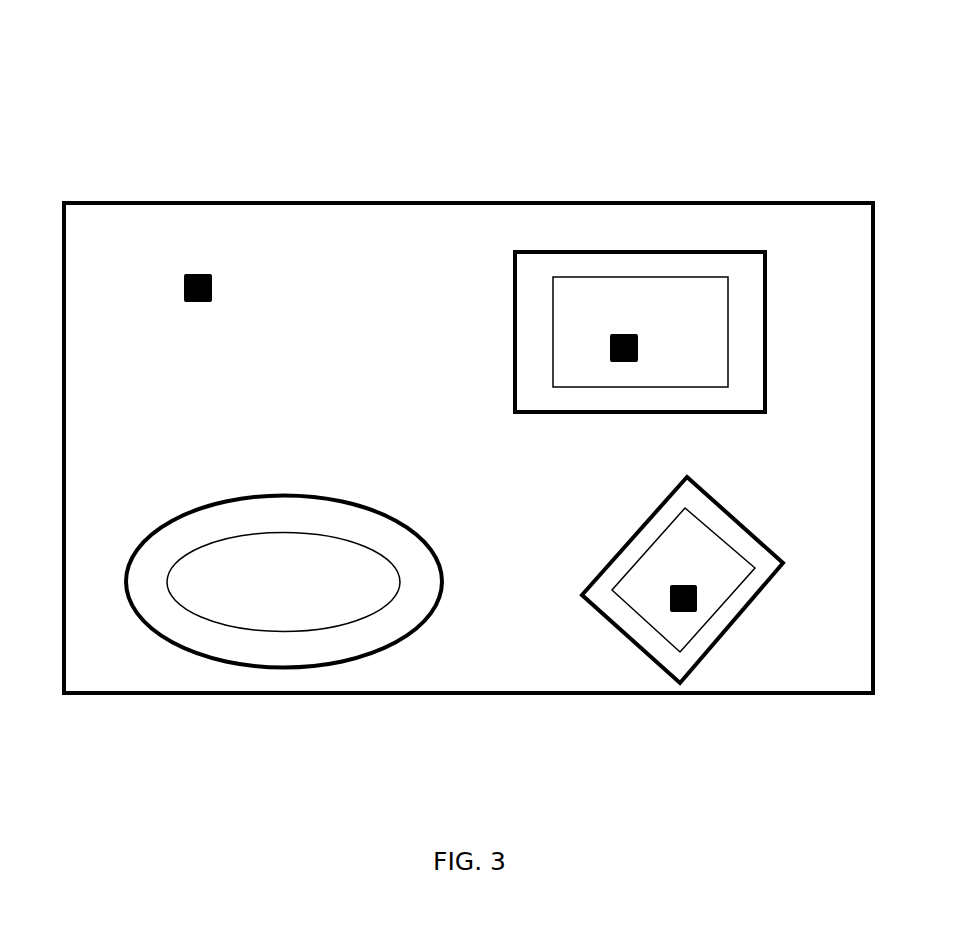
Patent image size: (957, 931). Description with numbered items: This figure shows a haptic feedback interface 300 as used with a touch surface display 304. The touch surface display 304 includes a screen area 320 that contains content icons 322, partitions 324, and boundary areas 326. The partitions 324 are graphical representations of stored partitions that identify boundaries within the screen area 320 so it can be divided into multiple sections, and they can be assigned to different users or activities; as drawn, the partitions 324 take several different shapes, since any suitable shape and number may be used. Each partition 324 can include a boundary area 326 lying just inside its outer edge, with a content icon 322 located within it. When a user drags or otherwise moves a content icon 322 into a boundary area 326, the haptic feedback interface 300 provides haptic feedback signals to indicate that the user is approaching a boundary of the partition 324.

The haptic feedback interface 300 is at (781, 90).
The touch surface display 304 is at (372, 201).
The screen area 320 is at (806, 250).
The content icon 322 is at (212, 274).
The partition 324 is at (513, 369).
The boundary area 326 is at (729, 348).